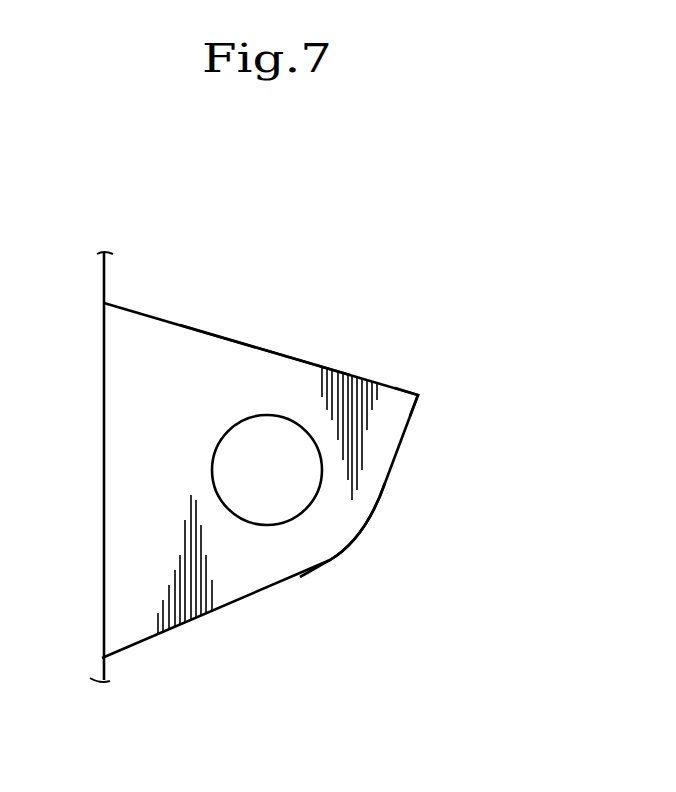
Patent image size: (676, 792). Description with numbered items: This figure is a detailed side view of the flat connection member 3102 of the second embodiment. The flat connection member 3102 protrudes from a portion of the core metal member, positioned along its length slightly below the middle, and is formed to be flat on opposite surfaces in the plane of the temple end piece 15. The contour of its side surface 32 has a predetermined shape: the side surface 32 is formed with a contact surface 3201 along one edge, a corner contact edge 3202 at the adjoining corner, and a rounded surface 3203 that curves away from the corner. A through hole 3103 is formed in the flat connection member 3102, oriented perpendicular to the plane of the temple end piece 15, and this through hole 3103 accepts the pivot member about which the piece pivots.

The temple end piece 15 is at (104, 285).
The side surface 32 is at (218, 332).
The contact surface 3201 is at (272, 353).
The corner contact edge 3202 is at (418, 395).
The rounded surface 3203 is at (332, 560).
The flat connection member 3102 is at (435, 228).
The through hole 3103 is at (265, 525).